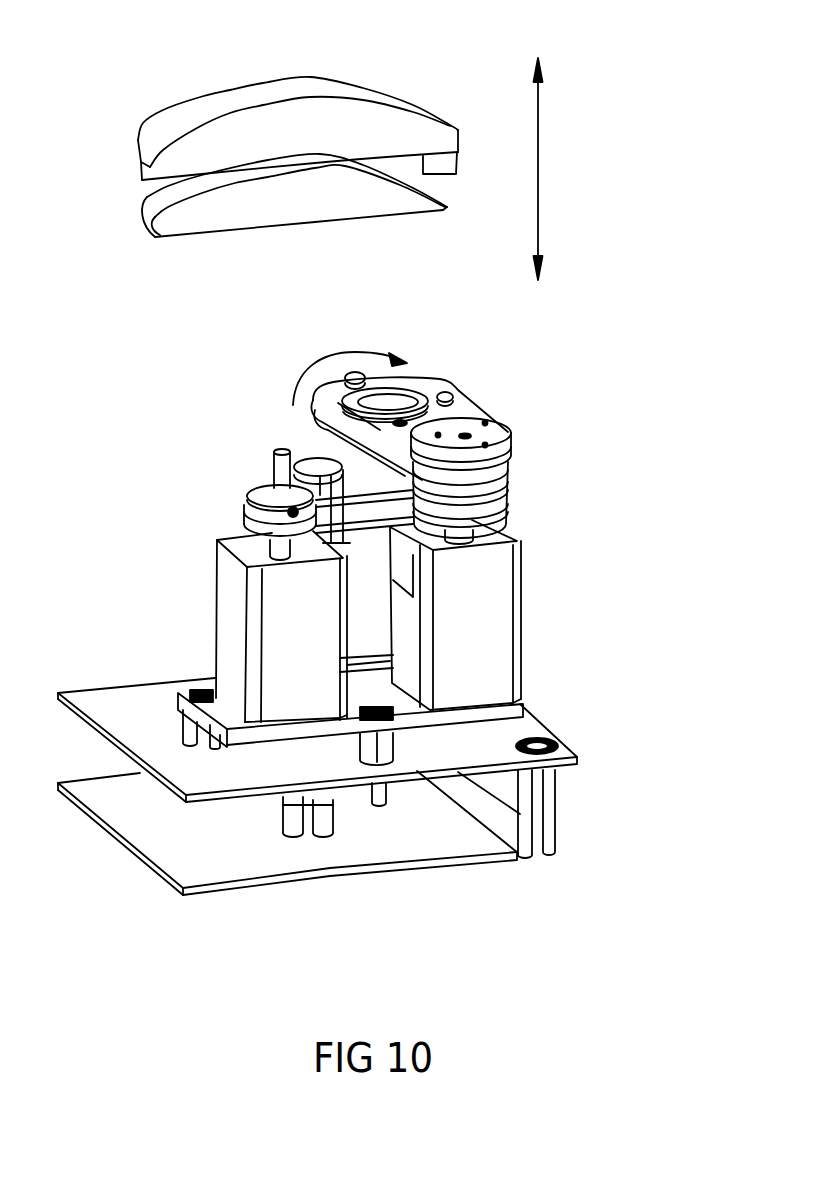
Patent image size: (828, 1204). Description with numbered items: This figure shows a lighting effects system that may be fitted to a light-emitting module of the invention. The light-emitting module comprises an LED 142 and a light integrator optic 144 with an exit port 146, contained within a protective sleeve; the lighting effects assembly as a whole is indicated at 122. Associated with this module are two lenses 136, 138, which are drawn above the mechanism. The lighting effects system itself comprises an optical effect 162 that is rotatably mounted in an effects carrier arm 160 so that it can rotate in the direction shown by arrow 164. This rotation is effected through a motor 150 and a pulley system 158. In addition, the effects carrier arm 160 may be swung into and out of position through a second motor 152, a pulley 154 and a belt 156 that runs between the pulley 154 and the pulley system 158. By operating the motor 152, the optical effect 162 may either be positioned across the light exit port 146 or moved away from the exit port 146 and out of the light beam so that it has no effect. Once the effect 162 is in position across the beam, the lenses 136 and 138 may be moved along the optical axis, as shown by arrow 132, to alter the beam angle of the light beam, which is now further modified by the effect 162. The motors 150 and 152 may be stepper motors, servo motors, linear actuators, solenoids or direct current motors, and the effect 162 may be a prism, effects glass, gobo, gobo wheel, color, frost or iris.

The lens assembly 122 is at (503, 53).
The arrow 132 is at (563, 169).
The lens 136 is at (255, 97).
The lens 138 is at (252, 205).
The LED 142 is at (285, 812).
The light integrator optic 144 is at (350, 815).
The exit port 146 is at (297, 457).
The motor 150 is at (228, 595).
The motor 152 is at (500, 603).
The pulley 154 is at (240, 503).
The belt 156 is at (512, 562).
The pulley system 158 is at (505, 428).
The effects carrier arm 160 is at (462, 410).
The optical effect 162 is at (417, 377).
The arrow 164 is at (350, 364).